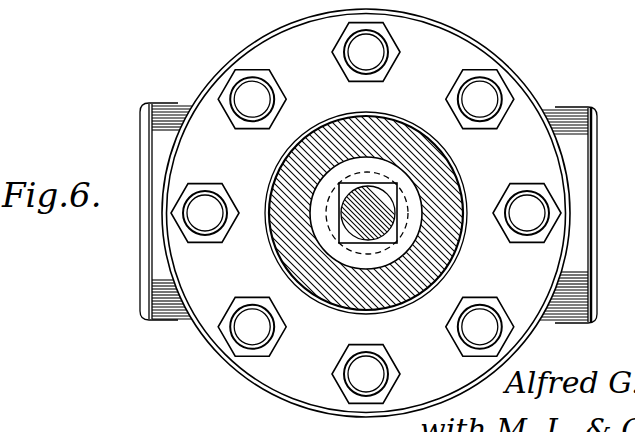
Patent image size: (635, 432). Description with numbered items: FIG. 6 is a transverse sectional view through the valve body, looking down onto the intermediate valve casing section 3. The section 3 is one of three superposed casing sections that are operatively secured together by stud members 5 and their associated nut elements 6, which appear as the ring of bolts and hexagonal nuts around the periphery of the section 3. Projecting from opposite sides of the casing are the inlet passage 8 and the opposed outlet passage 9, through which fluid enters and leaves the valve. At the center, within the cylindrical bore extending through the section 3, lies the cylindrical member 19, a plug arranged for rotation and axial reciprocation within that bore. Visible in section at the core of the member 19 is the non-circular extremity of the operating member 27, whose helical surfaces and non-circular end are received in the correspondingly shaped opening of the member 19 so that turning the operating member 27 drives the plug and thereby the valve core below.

The intermediate valve casing section 3 is at (497, 53).
The stud member 5 is at (250, 92).
The nut element 6 is at (248, 69).
The inlet passage 8 is at (139, 280).
The outlet passage 9 is at (598, 258).
The cylindrical member 19 is at (410, 196).
The operating member 27 is at (343, 242).